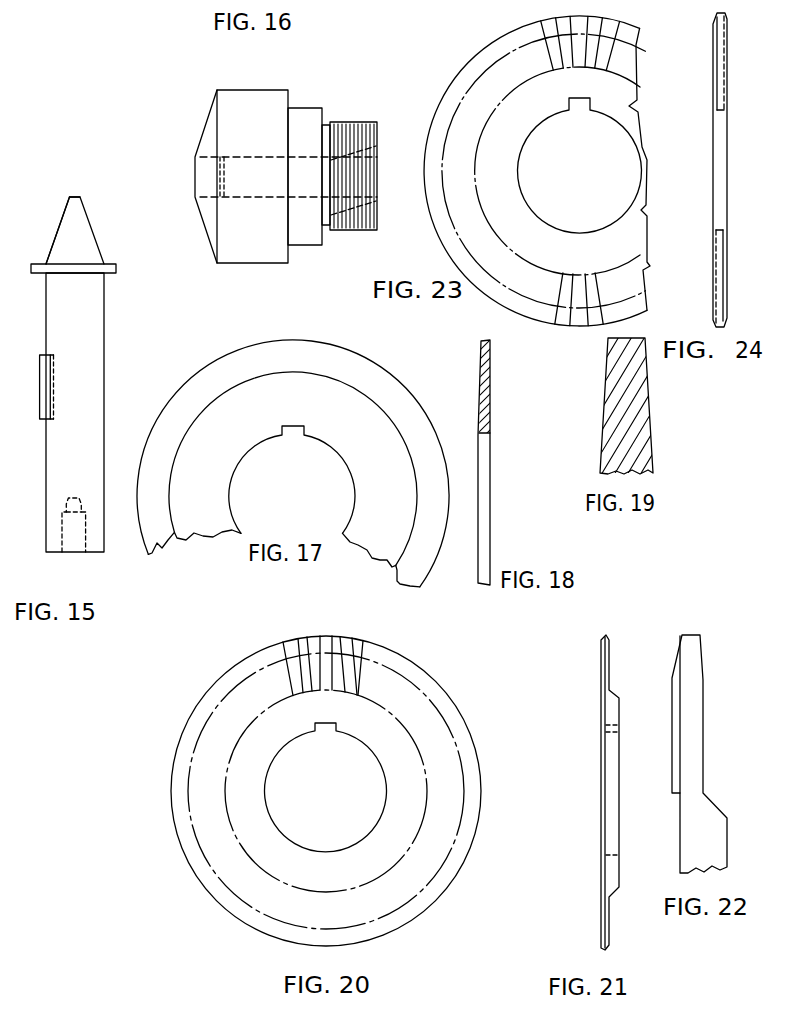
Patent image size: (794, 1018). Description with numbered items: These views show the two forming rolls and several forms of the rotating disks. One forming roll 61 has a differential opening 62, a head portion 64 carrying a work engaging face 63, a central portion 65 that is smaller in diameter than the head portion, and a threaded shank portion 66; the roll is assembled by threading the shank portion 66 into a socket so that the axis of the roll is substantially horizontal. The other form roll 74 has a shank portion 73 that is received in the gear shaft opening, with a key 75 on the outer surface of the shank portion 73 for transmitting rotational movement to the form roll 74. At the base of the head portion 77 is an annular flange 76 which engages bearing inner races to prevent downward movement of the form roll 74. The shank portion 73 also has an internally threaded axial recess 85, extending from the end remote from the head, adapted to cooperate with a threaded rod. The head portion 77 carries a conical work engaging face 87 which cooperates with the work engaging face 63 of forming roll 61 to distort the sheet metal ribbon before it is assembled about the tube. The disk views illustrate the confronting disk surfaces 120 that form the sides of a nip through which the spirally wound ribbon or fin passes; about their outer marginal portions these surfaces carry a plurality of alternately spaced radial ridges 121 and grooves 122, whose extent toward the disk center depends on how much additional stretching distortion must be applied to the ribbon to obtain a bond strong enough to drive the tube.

In FIG. 15, the shank portion 73 is at (46, 456).
In FIG. 15, the form roll 74 is at (60, 230).
In FIG. 15, the key 75 is at (41, 398).
In FIG. 15, the annular flange 76 is at (107, 264).
In FIG. 15, the head portion 77 is at (83, 234).
In FIG. 15, the internally threaded axial recess 85 is at (75, 537).
In FIG. 15, the conical work engaging face 87 is at (82, 206).
In FIG. 16, the forming roll 61 is at (212, 107).
In FIG. 16, the differential opening 62 is at (205, 170).
In FIG. 16, the work engaging face 63 is at (205, 132).
In FIG. 16, the head portion 64 is at (230, 95).
In FIG. 16, the central portion 65 is at (300, 115).
In FIG. 16, the threaded shank portion 66 is at (352, 125).
In FIG. 21, the confronting disk surfaces 120 is at (602, 675).
In FIG. 20, the radial ridges 121 is at (323, 638).
In FIG. 20, the grooves 122 is at (353, 638).